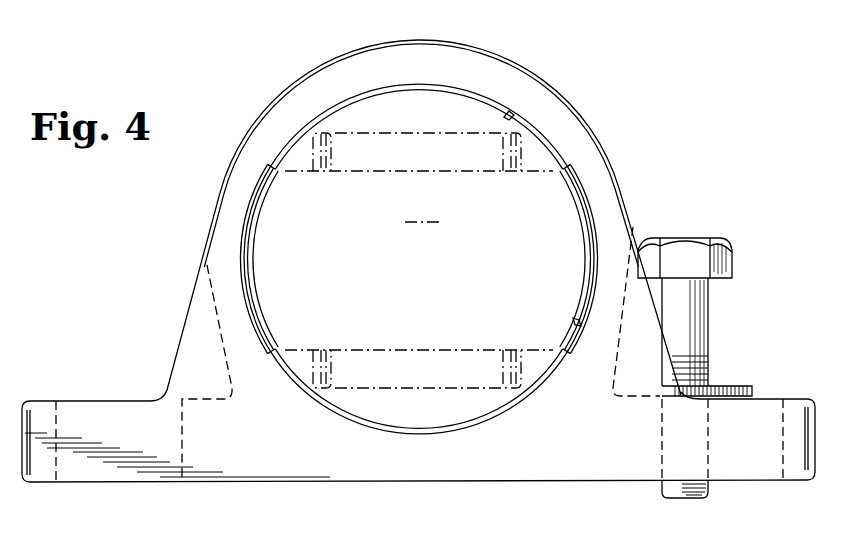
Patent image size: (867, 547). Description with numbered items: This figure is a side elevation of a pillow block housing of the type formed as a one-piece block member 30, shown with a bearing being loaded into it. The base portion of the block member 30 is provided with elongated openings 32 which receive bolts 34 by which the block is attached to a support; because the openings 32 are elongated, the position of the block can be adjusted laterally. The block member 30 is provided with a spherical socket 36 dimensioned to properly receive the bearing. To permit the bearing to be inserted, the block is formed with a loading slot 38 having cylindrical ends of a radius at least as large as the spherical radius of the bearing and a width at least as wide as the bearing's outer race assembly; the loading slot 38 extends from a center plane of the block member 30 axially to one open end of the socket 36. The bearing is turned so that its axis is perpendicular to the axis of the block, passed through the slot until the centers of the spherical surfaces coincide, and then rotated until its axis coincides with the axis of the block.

The block member 30 is at (603, 150).
The elongated openings 32 is at (58, 415).
The bolts 34 is at (723, 272).
The spherical socket 36 is at (511, 116).
The loading slot 38 is at (579, 326).